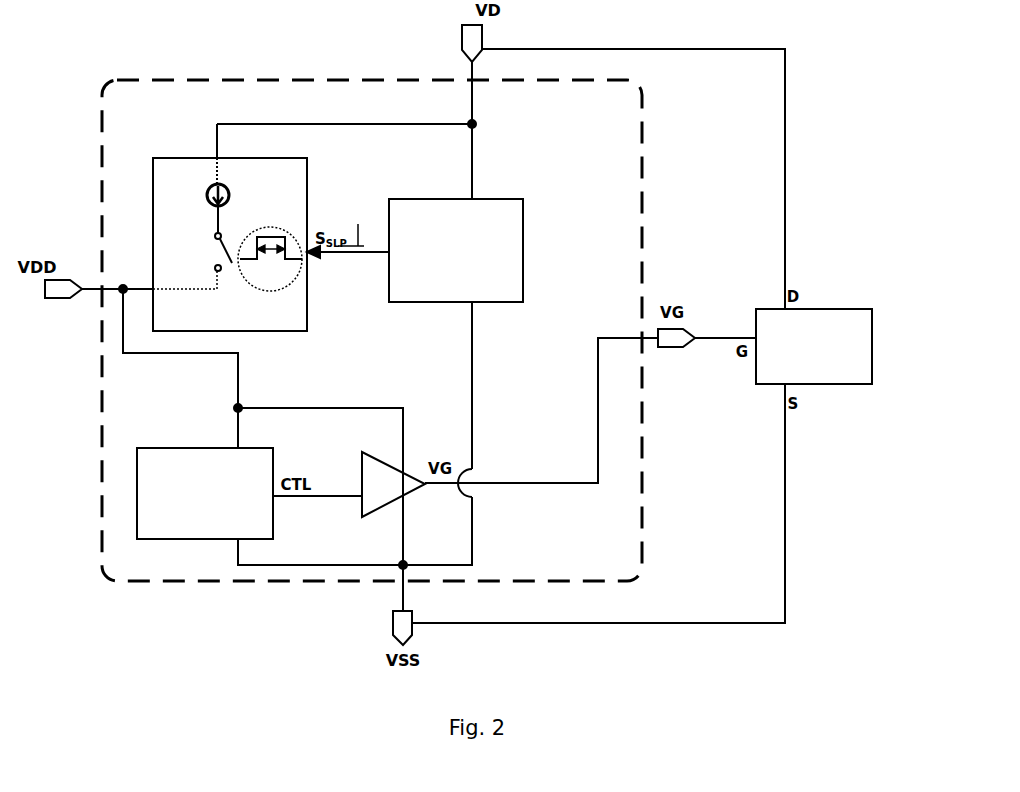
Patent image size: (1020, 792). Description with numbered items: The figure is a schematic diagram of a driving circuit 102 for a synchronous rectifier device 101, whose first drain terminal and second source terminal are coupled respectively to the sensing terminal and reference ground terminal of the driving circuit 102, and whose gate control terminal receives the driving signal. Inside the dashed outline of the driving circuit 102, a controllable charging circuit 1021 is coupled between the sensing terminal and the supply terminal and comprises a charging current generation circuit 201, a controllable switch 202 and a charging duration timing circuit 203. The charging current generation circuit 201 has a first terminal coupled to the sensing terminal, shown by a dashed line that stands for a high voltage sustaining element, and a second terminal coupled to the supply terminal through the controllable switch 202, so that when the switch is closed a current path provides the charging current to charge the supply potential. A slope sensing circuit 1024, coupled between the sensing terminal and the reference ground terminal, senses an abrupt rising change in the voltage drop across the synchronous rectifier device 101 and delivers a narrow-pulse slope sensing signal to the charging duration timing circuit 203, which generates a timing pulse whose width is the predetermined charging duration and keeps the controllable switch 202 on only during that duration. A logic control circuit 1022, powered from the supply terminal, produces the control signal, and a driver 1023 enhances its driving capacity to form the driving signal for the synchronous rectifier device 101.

The synchronous rectifier device 101 is at (873, 330).
The driving circuit 102 is at (250, 80).
The controllable charging circuit 1021 is at (200, 157).
The logic control circuit 1022 is at (190, 447).
The driver 1023 is at (360, 473).
The slope sensing circuit 1024 is at (524, 222).
The charging current generation circuit 201 is at (230, 193).
The controllable switch 202 is at (210, 253).
The charging duration timing circuit 203 is at (264, 287).